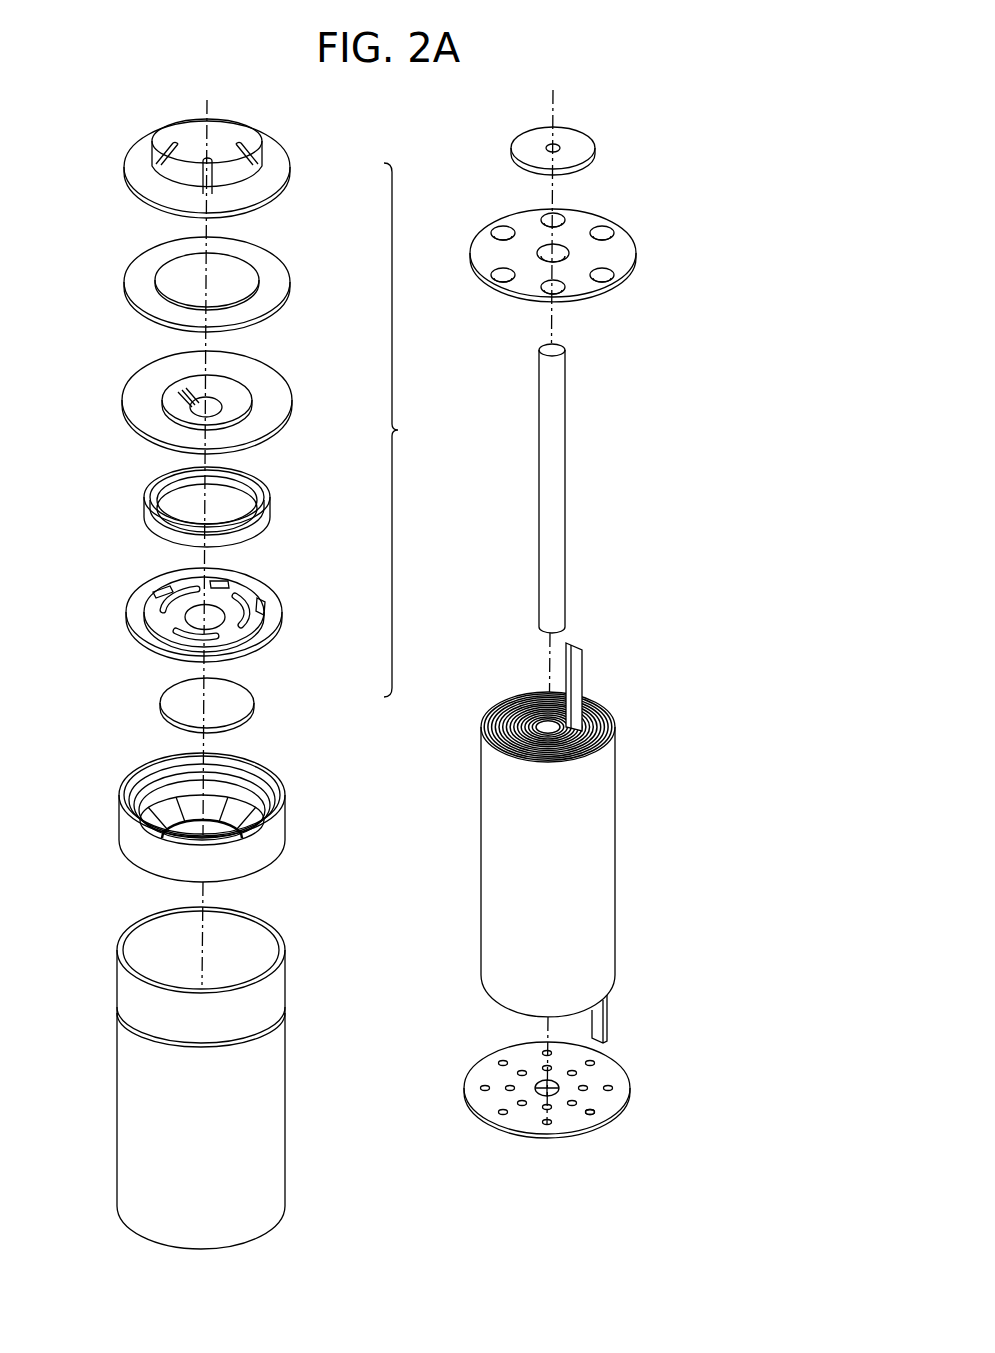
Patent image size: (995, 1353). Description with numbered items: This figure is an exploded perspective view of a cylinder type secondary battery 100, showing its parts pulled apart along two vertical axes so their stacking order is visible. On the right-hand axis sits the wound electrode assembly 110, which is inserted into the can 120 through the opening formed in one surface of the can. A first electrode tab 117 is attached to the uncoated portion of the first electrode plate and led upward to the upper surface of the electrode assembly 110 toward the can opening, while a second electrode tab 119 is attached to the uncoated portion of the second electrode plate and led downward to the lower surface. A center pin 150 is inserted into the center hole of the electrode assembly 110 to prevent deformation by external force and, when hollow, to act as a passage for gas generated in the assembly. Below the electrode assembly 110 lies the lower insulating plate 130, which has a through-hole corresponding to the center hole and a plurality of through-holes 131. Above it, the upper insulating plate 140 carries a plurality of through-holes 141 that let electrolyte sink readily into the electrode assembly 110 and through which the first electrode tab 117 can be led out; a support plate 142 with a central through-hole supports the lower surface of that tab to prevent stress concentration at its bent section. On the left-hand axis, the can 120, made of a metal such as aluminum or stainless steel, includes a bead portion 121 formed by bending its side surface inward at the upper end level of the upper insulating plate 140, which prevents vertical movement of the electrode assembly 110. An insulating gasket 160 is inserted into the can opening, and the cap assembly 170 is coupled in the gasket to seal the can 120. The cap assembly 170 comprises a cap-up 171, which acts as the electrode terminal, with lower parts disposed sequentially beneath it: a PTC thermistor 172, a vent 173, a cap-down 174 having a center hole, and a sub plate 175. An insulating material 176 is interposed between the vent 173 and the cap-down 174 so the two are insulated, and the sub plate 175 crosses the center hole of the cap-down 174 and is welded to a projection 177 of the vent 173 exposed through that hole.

The cylinder type secondary battery 100 is at (95, 175).
The electrode assembly 110 is at (609, 867).
The first electrode tab 117 is at (574, 668).
The second electrode tab 119 is at (610, 1031).
The can 120 is at (245, 1078).
The bead portion 121 is at (278, 1010).
The lower insulating plate 130 is at (592, 1091).
The through-holes 131 is at (593, 1112).
The upper insulating plate 140 is at (608, 235).
The through-holes 141 is at (602, 231).
The support plate 142 is at (583, 144).
The center pin 150 is at (556, 478).
The insulating gasket 160 is at (280, 822).
The cap assembly 170 is at (413, 430).
The cap-up 171 is at (277, 150).
The PTC thermistor 172 is at (280, 267).
The vent 173 is at (251, 390).
The cap-down 174 is at (272, 596).
The sub plate 175 is at (242, 692).
The insulating material 176 is at (263, 496).
The projection 177 is at (214, 403).